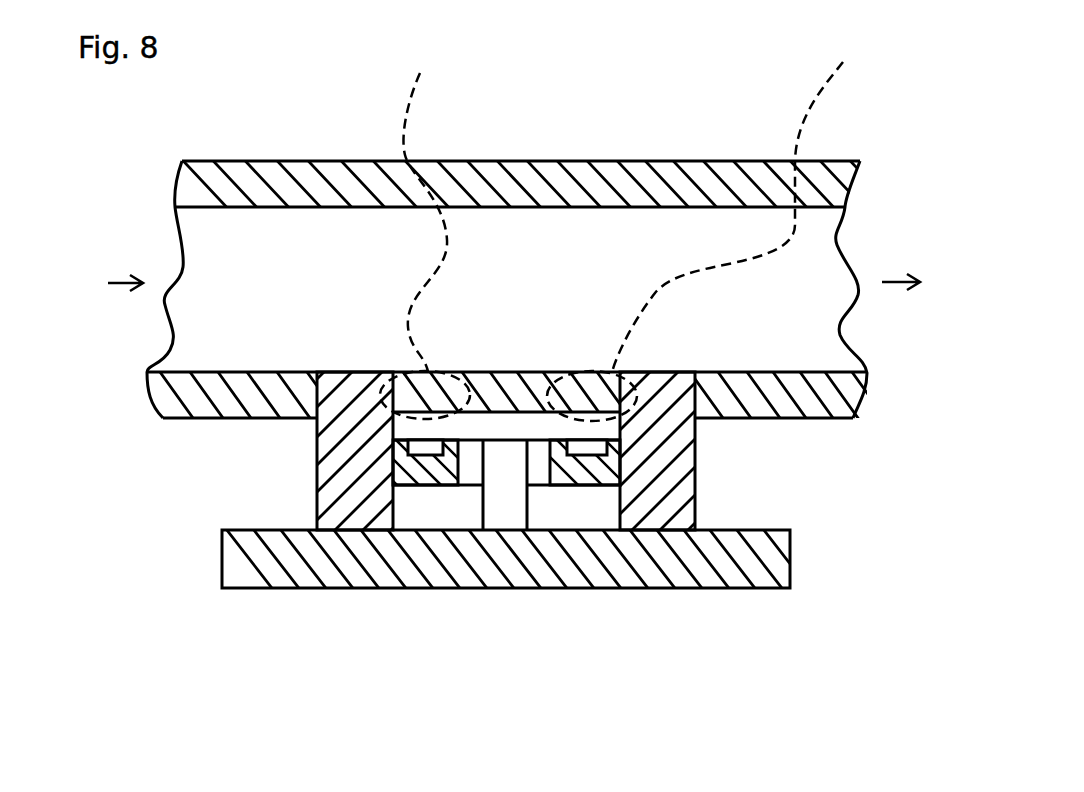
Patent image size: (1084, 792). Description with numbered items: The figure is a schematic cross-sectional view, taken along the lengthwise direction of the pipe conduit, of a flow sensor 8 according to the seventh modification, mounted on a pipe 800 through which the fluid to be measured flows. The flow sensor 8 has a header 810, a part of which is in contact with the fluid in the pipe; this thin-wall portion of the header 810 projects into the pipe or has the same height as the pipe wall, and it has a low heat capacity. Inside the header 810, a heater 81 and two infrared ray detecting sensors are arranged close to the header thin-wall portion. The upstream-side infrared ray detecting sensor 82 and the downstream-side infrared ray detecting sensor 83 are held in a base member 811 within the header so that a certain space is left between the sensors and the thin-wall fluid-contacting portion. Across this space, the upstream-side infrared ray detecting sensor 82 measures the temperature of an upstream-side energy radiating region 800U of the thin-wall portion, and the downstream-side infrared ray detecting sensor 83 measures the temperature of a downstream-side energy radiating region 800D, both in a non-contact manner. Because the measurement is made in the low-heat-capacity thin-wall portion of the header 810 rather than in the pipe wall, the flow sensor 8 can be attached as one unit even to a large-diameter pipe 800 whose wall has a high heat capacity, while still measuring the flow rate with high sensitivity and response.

The flow sensor 8 is at (507, 552).
The heater 81 is at (505, 513).
The base member 811 is at (438, 487).
The upstream-side infrared ray detecting sensor 82 is at (420, 443).
The downstream-side infrared ray detecting sensor 83 is at (592, 438).
The header 810 is at (695, 488).
The duct 800 is at (683, 161).
The upstream-side energy radiating region 800U is at (425, 231).
The downstream-side energy radiating region 800D is at (718, 226).